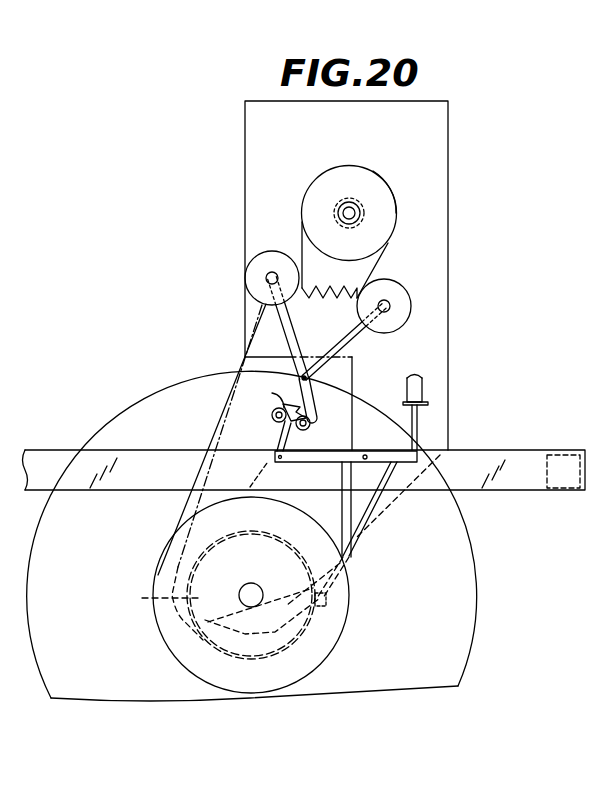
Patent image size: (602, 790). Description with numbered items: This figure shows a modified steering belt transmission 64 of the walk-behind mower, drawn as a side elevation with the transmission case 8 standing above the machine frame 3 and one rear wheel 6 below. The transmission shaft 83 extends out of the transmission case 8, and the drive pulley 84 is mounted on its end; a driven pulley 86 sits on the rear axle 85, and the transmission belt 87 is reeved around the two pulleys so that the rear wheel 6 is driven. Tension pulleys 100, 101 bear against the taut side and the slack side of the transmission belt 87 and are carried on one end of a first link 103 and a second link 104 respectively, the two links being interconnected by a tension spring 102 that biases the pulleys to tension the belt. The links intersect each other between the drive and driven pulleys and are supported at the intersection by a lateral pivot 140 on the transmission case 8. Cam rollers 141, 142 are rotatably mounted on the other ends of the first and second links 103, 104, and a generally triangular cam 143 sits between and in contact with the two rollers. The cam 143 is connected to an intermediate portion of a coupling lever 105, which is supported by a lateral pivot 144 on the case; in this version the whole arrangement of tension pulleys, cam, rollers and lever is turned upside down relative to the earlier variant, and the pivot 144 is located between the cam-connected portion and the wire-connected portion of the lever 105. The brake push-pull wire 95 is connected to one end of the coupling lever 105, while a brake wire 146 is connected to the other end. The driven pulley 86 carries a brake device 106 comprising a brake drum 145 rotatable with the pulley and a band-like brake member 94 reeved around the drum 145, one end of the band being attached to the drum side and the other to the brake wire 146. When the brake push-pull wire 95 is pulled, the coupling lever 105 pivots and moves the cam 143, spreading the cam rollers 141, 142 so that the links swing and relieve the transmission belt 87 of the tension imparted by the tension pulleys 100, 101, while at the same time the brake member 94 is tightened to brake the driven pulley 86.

The machine frame 3 is at (503, 458).
The rear wheel 6 is at (480, 589).
The rear wheel drive transmission case 8 is at (436, 158).
The steering belt transmission 64 is at (328, 171).
The transmission shaft 83 is at (352, 210).
The drive pulley 84 is at (396, 203).
The rear axle 85 is at (259, 577).
The driven pulley 86 is at (340, 637).
The transmission belt 87 is at (300, 248).
The brake member 94 is at (203, 642).
The brake push-pull wire 95 is at (422, 388).
The tension pulley 100 is at (247, 288).
The tension pulley 101 is at (410, 273).
The tension spring 102 is at (331, 294).
The first link 103 is at (350, 340).
The second link 104 is at (290, 340).
The coupling lever 105 is at (346, 504).
The brake device 106 is at (326, 598).
The lateral pivot 140 is at (303, 362).
The cam roller 141 is at (303, 430).
The cam roller 142 is at (273, 421).
The cam 143 is at (272, 393).
The lateral pivot 144 is at (366, 455).
The brake drum 145 is at (151, 605).
The brake wire 146 is at (374, 503).